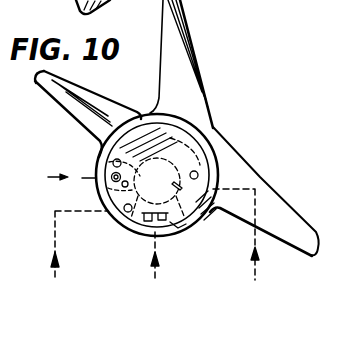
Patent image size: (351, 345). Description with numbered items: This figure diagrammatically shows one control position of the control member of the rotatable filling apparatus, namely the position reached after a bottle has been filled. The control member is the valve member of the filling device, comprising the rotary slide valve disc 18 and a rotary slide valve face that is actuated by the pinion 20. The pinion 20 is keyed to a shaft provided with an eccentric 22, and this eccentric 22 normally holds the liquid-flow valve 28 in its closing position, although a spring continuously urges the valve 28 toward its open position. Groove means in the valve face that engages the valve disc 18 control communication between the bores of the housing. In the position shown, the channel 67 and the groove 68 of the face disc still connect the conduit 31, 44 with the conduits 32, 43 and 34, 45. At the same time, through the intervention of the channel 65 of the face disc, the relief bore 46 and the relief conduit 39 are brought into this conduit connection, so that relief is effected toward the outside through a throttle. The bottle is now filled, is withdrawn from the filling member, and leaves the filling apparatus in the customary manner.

The rotary slide valve disc 18 is at (152, 124).
The pinion 20 is at (48, 88).
The eccentric 22 is at (213, 128).
The conduit 45 is at (190, 162).
The relief bore 46 is at (99, 156).
The channel 67 is at (205, 218).
The channel 65 is at (100, 198).
The conduit 43 is at (108, 212).
The groove 68 is at (128, 227).
The conduit 44 is at (148, 236).
The valve 28 is at (176, 240).
The relief conduit 39 is at (57, 170).
The conduit 32 is at (73, 260).
The conduit 31 is at (152, 271).
The conduit 34 is at (240, 248).